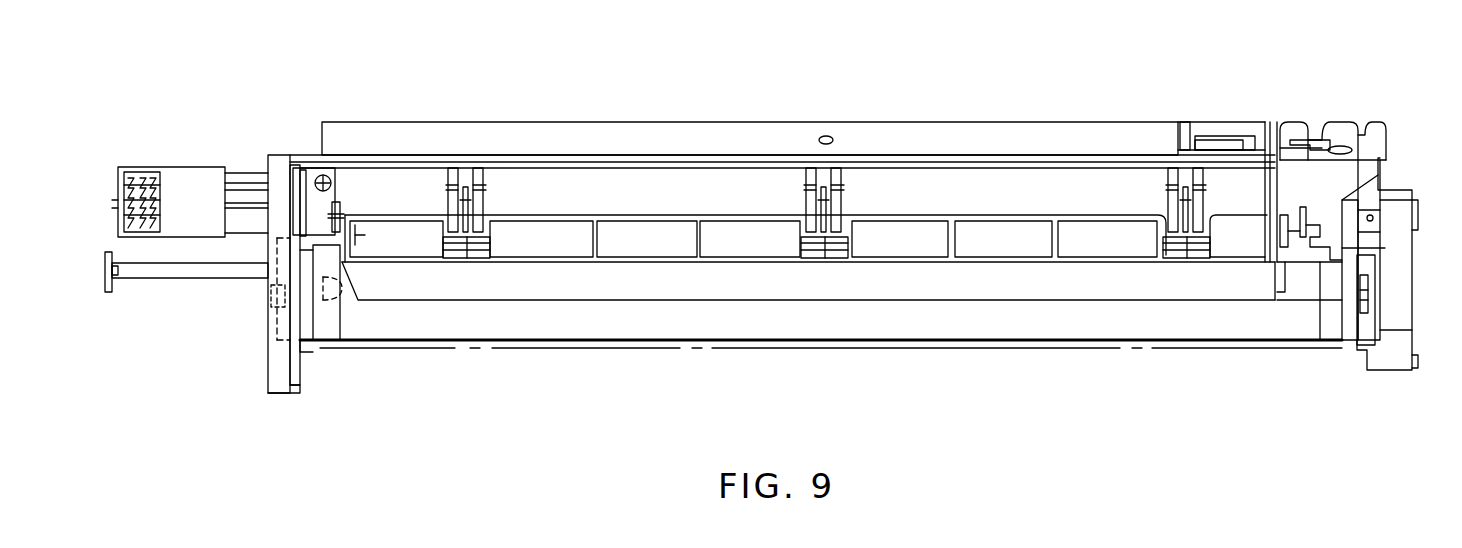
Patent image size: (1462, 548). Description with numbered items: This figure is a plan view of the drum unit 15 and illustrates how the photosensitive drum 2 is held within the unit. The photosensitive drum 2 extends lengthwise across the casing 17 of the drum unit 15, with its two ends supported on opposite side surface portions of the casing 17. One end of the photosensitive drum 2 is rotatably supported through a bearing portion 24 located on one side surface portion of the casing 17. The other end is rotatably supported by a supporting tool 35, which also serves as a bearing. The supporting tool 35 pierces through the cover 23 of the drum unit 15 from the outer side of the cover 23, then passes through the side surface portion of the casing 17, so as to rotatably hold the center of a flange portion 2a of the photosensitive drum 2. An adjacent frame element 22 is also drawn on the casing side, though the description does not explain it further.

The drum unit 15 is at (958, 102).
The photosensitive drum 2 is at (850, 335).
The flange portion 2a is at (323, 318).
The supporting tool 35 is at (270, 298).
The cover 23 is at (275, 372).
The casing 17 is at (303, 352).
The frame 22 is at (1390, 222).
The bearing portion 24 is at (1372, 318).